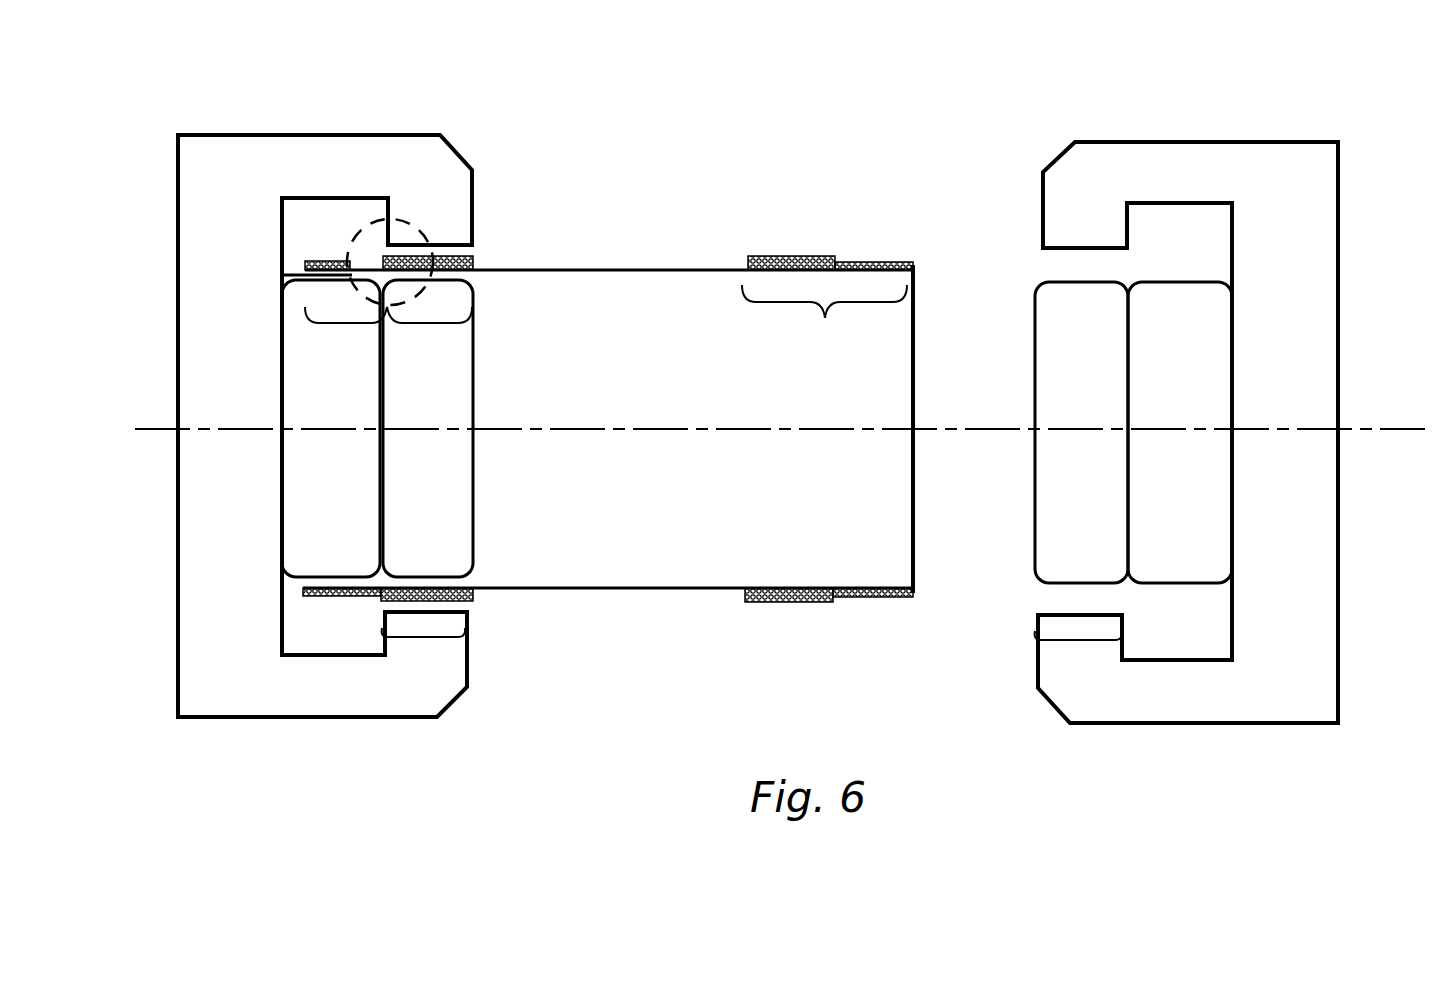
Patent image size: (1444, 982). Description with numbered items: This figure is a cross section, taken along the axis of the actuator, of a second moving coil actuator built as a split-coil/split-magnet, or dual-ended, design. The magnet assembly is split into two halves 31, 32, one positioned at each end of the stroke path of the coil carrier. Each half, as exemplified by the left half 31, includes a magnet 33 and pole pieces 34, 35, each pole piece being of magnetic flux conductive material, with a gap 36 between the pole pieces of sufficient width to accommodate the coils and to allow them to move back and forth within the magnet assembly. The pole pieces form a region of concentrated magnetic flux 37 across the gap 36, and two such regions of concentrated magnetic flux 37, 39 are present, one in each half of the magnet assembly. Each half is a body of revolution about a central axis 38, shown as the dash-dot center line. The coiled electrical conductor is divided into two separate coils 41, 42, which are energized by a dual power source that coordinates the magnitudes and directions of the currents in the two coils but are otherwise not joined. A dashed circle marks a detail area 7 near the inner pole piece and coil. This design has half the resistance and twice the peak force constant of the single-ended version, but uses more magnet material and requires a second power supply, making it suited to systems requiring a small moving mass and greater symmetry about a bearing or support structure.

The bearing detail region 7 is at (352, 276).
The left half of the magnet assembly 31 is at (180, 97).
The right half of the magnet assembly 32 is at (1340, 100).
The magnet 33 is at (307, 503).
The pole piece 34 is at (330, 165).
The pole piece 35 is at (447, 520).
The gap 36 is at (463, 605).
The region of concentrated magnetic flux 37 is at (427, 637).
The central axis 38 is at (1375, 432).
The region of concentrated magnetic flux 39 is at (1080, 640).
The coil 41 is at (387, 310).
The coil 42 is at (825, 318).